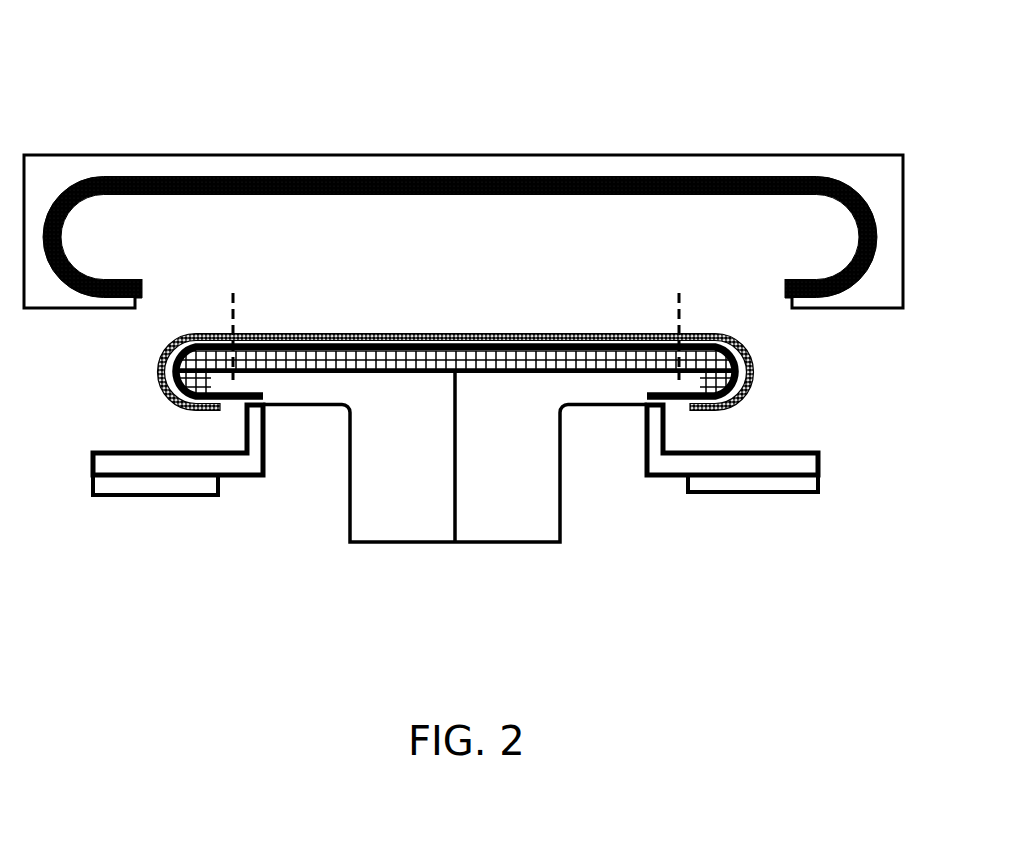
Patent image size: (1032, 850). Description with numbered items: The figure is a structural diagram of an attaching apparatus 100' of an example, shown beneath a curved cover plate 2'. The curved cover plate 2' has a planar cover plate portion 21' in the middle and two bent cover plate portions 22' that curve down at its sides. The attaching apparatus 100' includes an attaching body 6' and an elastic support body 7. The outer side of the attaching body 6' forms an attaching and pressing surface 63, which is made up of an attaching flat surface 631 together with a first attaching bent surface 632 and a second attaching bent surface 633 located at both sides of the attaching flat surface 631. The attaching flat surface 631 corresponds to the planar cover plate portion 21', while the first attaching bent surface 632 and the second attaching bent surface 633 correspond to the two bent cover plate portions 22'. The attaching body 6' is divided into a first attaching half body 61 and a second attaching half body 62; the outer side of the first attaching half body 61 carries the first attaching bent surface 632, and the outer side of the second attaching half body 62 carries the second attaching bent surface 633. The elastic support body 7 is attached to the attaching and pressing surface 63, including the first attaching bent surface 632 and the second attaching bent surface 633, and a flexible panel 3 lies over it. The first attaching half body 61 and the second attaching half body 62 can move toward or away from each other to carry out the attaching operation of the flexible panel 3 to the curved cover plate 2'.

The attaching apparatus 100' is at (463, 164).
The curved cover plate 2' is at (460, 157).
The planar cover plate portion 21' is at (421, 179).
The bent cover plate portion 22' is at (788, 179).
The flexible panel 3 is at (750, 352).
The elastic support body 7 is at (700, 382).
The attaching and pressing surface 63 is at (460, 483).
The attaching flat surface 631 is at (540, 376).
The first attaching bent surface 632 is at (217, 377).
The second attaching bent surface 633 is at (700, 408).
The attaching body 6' is at (455, 503).
The first attaching half body 61 is at (378, 492).
The second attaching half body 62 is at (532, 492).